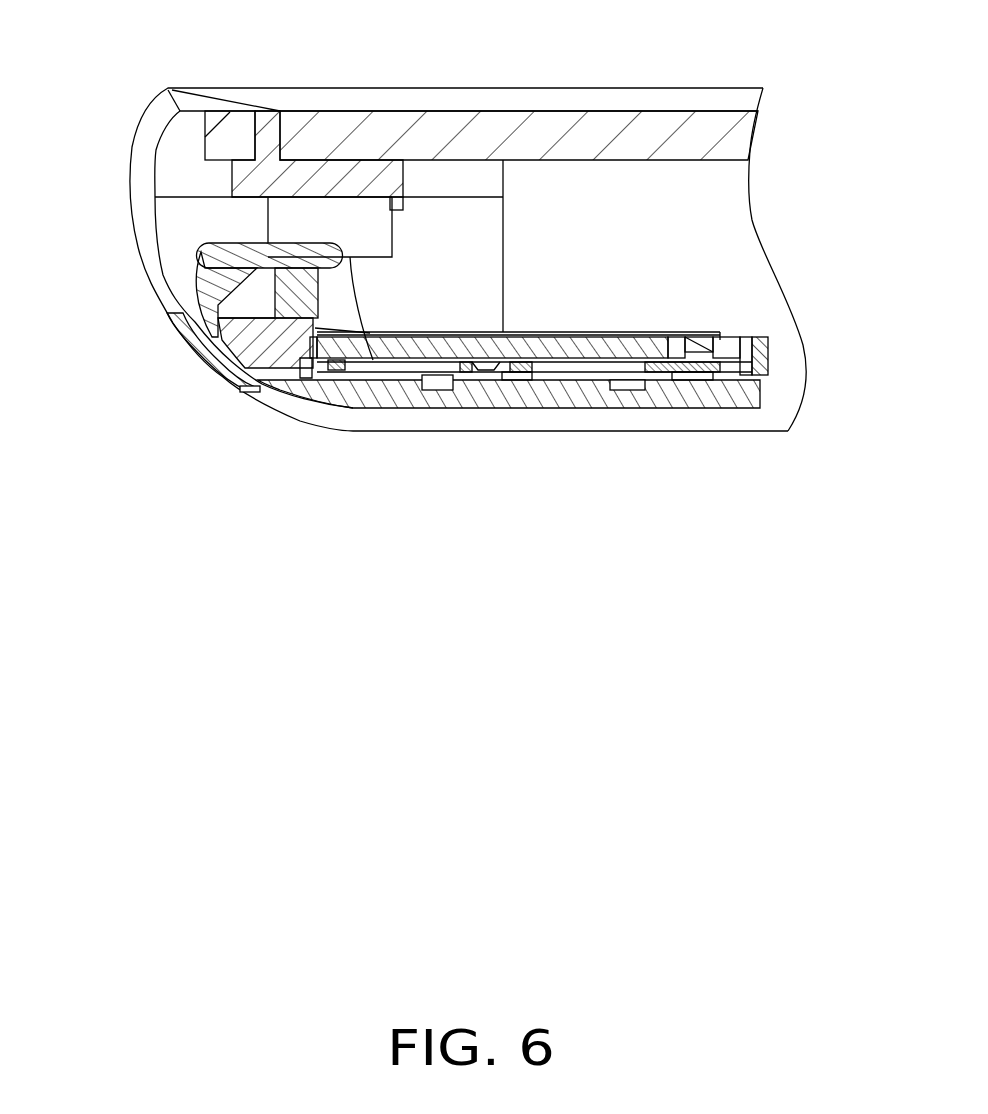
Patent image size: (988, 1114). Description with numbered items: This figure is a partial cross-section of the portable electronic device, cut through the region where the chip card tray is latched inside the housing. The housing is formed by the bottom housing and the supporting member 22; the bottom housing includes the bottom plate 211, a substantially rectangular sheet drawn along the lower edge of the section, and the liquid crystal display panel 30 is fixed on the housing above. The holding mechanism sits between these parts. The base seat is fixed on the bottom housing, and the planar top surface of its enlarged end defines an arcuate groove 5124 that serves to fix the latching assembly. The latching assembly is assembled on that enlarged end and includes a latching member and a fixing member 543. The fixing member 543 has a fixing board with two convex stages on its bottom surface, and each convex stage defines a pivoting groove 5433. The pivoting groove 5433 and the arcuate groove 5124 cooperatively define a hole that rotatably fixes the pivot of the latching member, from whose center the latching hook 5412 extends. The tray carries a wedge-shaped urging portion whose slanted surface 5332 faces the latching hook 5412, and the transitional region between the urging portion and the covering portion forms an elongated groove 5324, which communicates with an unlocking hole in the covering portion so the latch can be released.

The supporting member 22 is at (517, 142).
The liquid crystal display panel 30 is at (647, 103).
The bottom plate 211 is at (683, 415).
The fixing member 543 is at (295, 217).
The pivoting groove 5433 is at (337, 243).
The slanted surface 5332 is at (273, 318).
The latching hook 5412 is at (185, 321).
The elongated groove 5324 is at (215, 336).
The arcuate groove 5124 is at (373, 362).